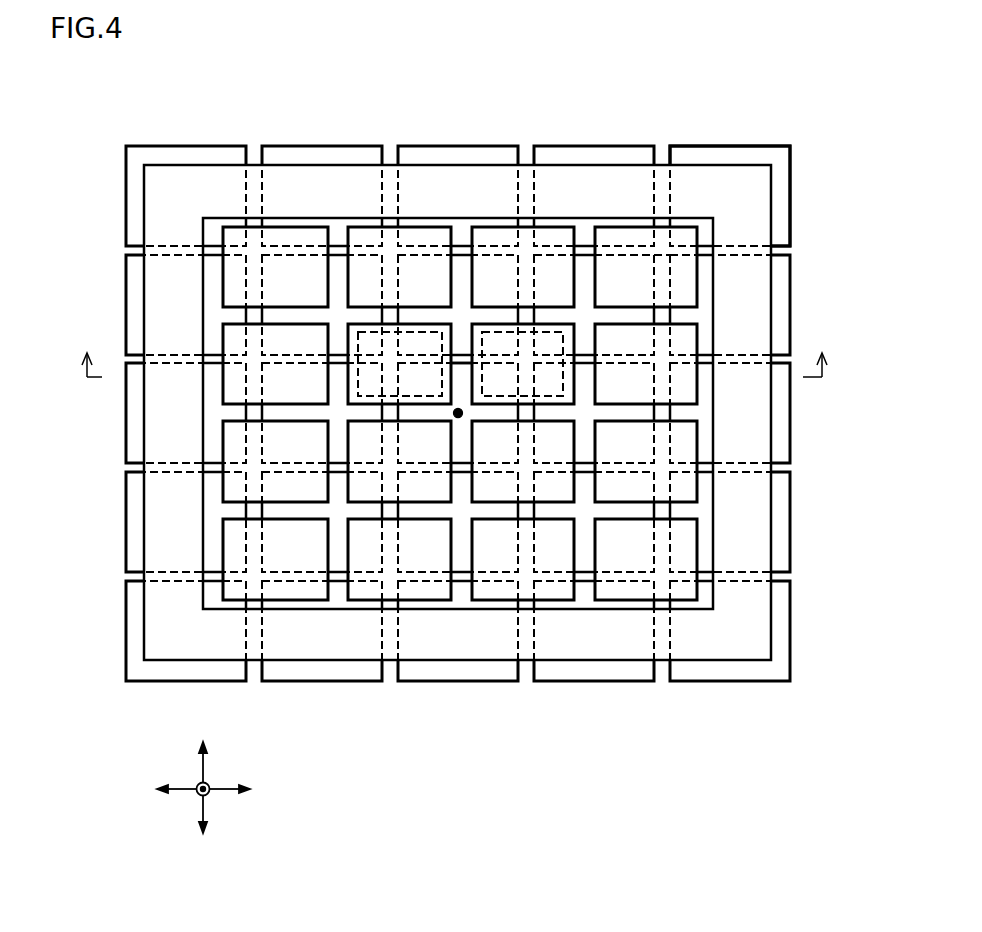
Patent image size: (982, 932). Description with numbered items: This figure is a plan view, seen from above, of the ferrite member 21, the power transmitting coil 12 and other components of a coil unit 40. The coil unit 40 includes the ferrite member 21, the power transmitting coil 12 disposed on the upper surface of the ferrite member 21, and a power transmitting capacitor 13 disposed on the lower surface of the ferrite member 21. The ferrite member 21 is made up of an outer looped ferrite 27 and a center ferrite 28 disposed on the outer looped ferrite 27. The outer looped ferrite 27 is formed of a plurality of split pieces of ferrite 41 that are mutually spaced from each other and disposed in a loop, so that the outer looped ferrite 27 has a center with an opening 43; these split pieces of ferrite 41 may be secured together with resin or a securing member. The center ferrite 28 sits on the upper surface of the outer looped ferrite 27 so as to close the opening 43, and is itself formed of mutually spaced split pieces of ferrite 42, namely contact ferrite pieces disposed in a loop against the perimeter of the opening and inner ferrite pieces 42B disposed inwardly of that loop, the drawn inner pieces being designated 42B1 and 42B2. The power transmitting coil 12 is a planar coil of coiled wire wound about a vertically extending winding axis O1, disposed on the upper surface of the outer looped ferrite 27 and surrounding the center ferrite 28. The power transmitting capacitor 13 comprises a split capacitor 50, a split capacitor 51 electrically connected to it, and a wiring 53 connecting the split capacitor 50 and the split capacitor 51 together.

The coil unit 40 is at (246, 101).
The power transmitting coil 12 is at (760, 230).
The power transmitting capacitor 13 is at (535, 91).
The ferrite member 21 is at (753, 91).
The outer looped ferrite 27 is at (738, 158).
The center ferrite 28 is at (663, 257).
The split pieces of ferrite 41 is at (778, 303).
The split pieces of ferrite 42 is at (658, 390).
The inner ferrite 42B is at (385, 472).
The first optical element of second type 42B1 is at (360, 327).
The second optical element of second type 42B2 is at (562, 323).
The opening 43 is at (588, 580).
The split capacitor 50 is at (387, 332).
The split capacitor 51 is at (524, 332).
The wiring 53 is at (463, 363).
The winding axis O1 is at (458, 418).